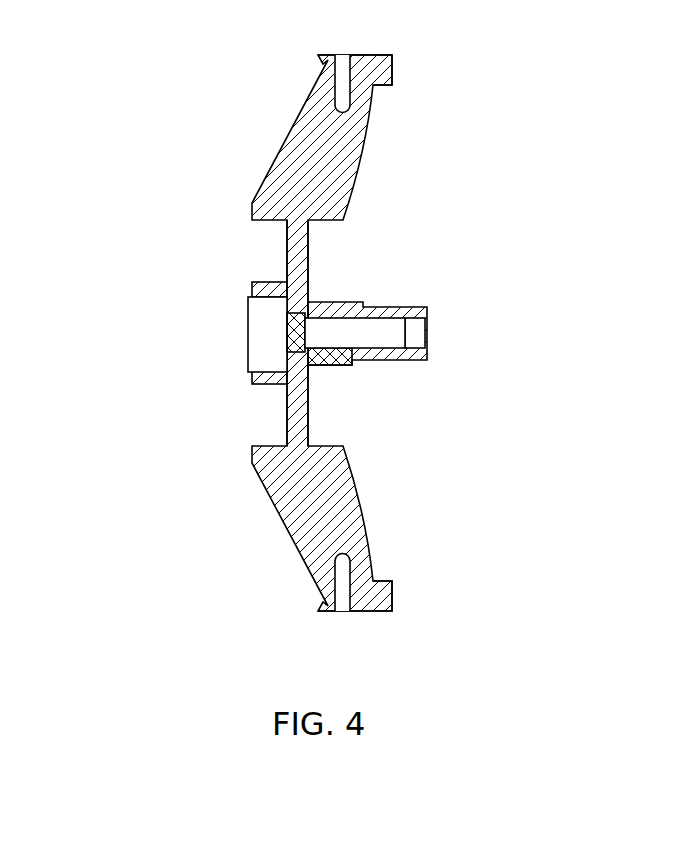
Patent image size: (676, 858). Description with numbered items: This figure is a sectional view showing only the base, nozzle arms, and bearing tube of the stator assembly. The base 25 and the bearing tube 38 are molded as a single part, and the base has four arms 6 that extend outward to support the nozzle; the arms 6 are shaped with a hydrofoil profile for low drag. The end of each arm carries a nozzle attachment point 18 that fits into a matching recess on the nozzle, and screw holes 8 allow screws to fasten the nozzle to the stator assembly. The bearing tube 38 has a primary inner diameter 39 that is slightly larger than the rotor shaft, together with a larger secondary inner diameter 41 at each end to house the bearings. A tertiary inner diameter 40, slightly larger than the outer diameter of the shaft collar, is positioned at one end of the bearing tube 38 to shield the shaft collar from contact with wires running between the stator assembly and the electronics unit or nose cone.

The arms 6 is at (225, 333).
The screw holes 8 is at (204, 306).
The nozzle attachment point 18 is at (427, 306).
The base 25 is at (189, 299).
The bearing tube 38 is at (414, 284).
The primary inner diameter 39 is at (419, 298).
The tertiary inner diameter 40 is at (202, 333).
The secondary inner diameter 41 is at (425, 376).